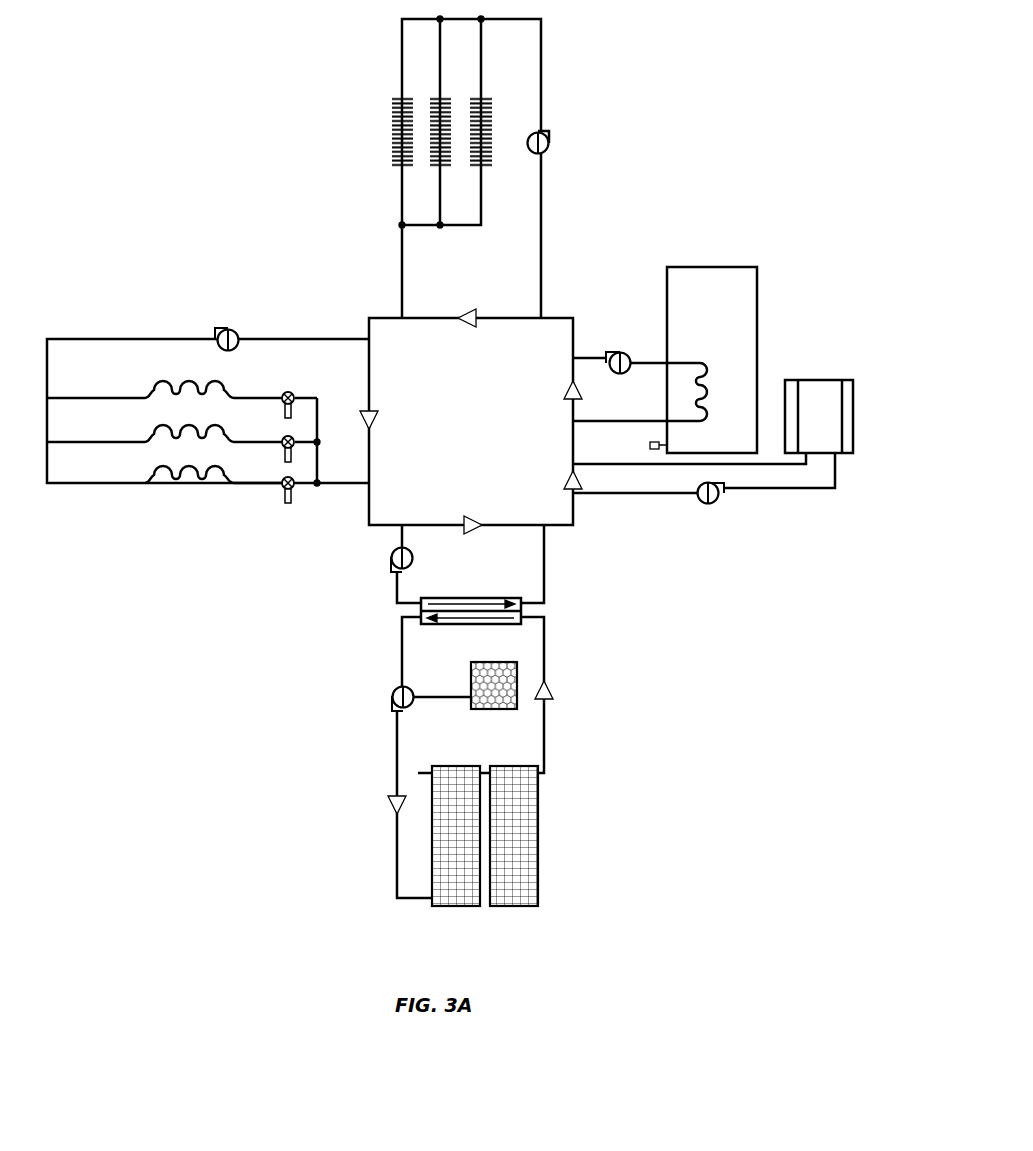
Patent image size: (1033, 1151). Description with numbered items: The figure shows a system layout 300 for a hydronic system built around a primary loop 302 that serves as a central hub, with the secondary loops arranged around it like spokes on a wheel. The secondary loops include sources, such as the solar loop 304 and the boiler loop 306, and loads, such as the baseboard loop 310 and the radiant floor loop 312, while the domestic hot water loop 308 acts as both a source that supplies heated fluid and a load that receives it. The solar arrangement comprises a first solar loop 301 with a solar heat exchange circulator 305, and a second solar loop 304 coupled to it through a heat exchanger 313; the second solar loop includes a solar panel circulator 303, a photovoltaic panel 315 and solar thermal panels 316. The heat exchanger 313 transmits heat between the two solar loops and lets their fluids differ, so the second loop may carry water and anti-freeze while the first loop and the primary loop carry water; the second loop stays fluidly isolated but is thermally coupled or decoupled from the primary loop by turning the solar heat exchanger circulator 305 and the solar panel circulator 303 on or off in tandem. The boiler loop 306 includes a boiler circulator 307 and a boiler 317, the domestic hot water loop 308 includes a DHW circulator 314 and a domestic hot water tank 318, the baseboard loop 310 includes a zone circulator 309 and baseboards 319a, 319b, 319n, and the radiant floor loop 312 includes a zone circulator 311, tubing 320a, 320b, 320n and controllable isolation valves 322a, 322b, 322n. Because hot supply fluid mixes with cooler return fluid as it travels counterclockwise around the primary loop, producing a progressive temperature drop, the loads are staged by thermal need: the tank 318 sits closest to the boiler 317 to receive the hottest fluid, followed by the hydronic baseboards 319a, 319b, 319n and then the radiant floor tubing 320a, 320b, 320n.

The system layout 300 is at (788, 77).
The first solar loop 301 is at (544, 545).
The primary loop 302 is at (494, 434).
The solar panel circulator 303 is at (392, 699).
The second solar loop 304 is at (544, 737).
The solar heat exchange circulator 305 is at (392, 557).
The boiler loop 306 is at (634, 495).
The boiler circulator 307 is at (717, 501).
The domestic hot water loop 308 is at (583, 357).
The zone circulator 309 is at (605, 142).
The baseboard loop 310 is at (541, 229).
The zone circulator 311 is at (232, 333).
The radiant floor loop 312 is at (80, 339).
The heat exchanger 313 is at (612, 612).
The domestic hot water circulator 314 is at (624, 353).
The photovoltaic panel 315 is at (625, 680).
The solar thermal panels 316 is at (628, 845).
The boiler 317 is at (853, 447).
The domestic hot water tank 318 is at (731, 300).
The baseboard 319a is at (400, 97).
The baseboard 319b is at (437, 97).
The baseboard 319n is at (482, 97).
The tubing 320a is at (147, 399).
The tubing 320b is at (147, 443).
The tubing 320n is at (147, 484).
The controllable isolation valve 322a is at (285, 406).
The controllable isolation valve 322b is at (285, 450).
The controllable isolation valve 322n is at (285, 491).